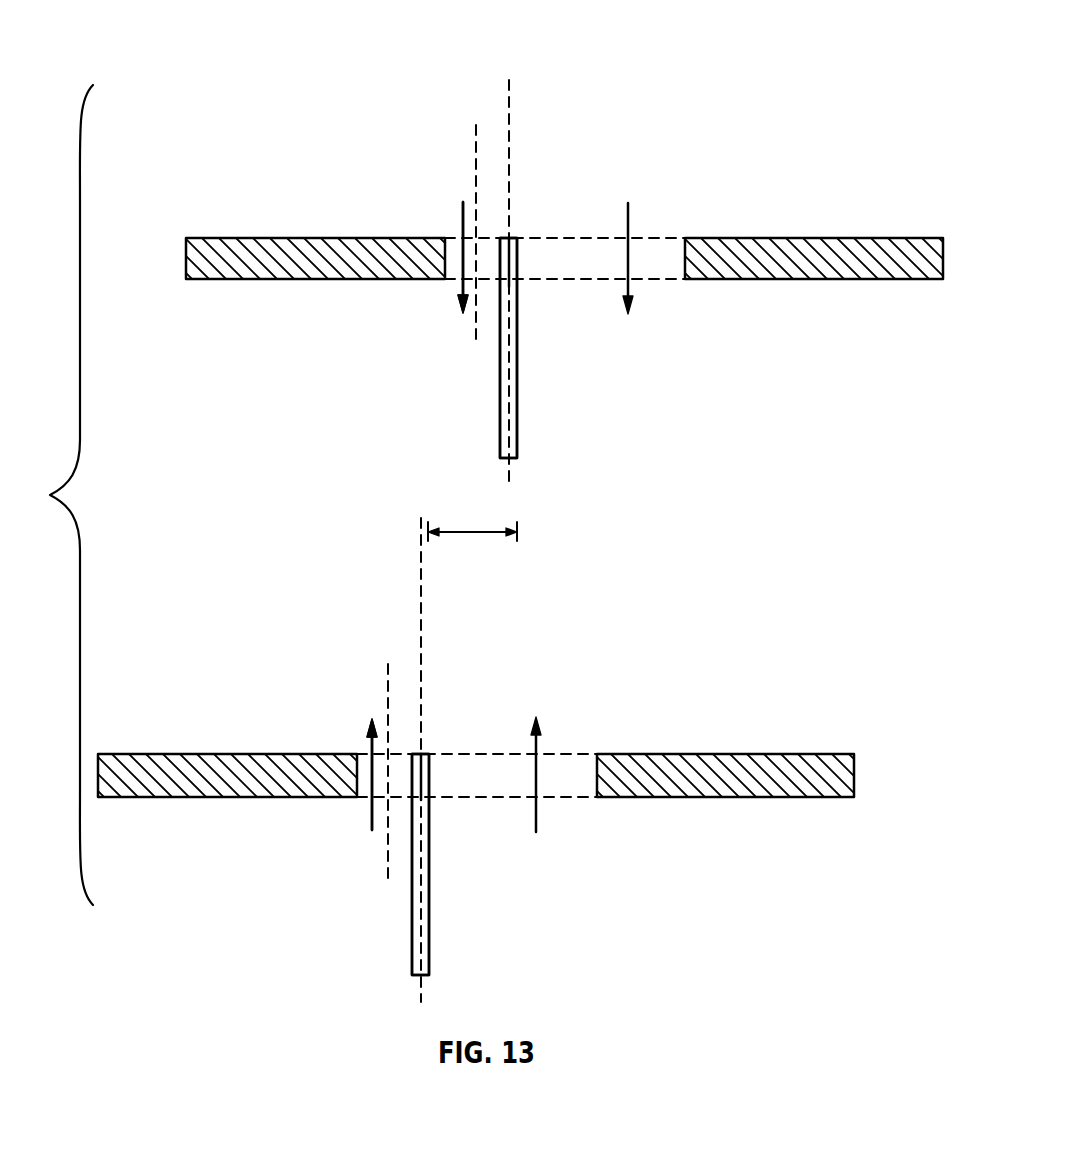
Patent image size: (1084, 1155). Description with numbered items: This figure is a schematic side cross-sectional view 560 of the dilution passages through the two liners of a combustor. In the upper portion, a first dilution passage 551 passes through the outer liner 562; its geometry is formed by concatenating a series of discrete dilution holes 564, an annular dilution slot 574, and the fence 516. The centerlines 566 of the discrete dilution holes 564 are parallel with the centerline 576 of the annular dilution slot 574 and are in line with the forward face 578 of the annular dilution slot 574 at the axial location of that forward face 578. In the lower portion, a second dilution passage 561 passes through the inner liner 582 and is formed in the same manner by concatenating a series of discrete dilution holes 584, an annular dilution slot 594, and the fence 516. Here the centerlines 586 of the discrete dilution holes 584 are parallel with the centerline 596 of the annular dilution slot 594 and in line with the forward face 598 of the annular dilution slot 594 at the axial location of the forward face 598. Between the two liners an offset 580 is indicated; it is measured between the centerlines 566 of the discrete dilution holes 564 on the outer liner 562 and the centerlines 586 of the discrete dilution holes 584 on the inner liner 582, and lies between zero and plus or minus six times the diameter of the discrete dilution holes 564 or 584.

The schematic side cross-sectional view 560 is at (818, 68).
The outer liner 562 is at (268, 237).
The discrete dilution holes 564 is at (661, 228).
The centerline of the annular dilution slot 576 is at (475, 165).
The annular dilution slot 574 is at (454, 228).
The first dilution passage 551 is at (455, 290).
The fence 516 is at (517, 428).
The centerlines of the discrete dilution holes 566 is at (508, 332).
The forward face of the annular dilution slot 578 is at (512, 258).
The offset 580 is at (472, 530).
The inner liner 582 is at (179, 753).
The discrete dilution holes 584 is at (556, 742).
The centerline of the annular dilution slot 596 is at (387, 685).
The annular dilution slot 594 is at (364, 743).
The second dilution passage 561 is at (367, 808).
The centerlines of the discrete dilution holes 586 is at (423, 852).
The forward face of the annular dilution slot 598 is at (423, 765).